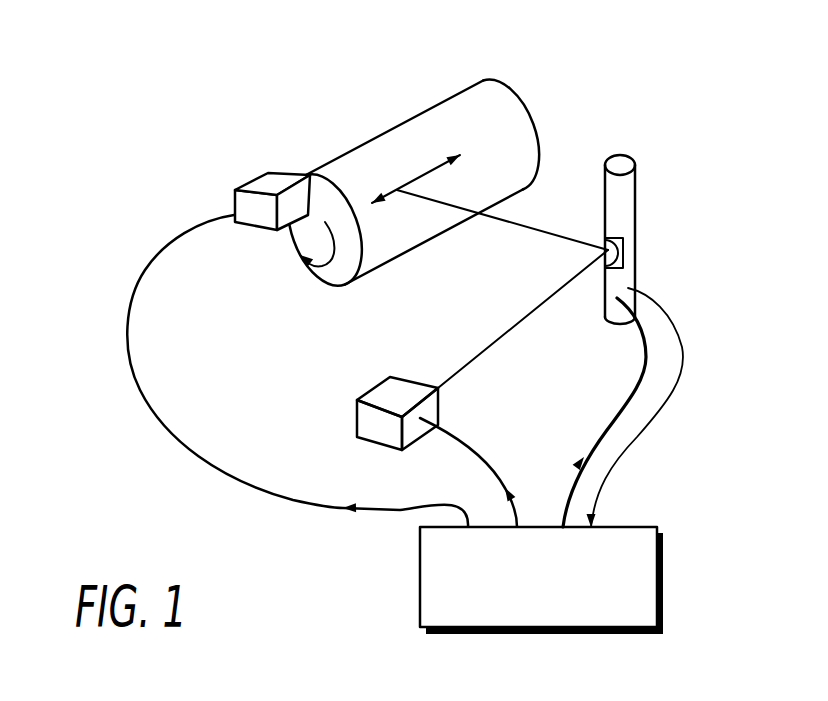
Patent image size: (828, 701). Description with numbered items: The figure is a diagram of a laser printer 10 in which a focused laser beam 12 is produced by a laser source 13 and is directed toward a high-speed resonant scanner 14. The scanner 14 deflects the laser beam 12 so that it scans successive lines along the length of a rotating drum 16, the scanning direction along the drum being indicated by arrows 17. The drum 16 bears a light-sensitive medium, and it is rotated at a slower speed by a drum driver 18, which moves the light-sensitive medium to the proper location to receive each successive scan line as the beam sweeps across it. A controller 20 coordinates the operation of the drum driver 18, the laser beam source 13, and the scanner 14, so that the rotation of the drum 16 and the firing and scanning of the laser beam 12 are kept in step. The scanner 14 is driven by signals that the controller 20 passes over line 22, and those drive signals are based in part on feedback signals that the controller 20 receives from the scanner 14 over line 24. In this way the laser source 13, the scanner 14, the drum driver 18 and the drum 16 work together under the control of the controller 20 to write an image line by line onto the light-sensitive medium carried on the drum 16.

The laser printer 10 is at (150, 488).
The focused laser beam 12 is at (508, 332).
The laser source 13 is at (423, 382).
The high-speed resonant scanner 14 is at (633, 197).
The drum 16 is at (427, 103).
The arrows 17 is at (403, 187).
The drum driver 18 is at (242, 190).
The controller 20 is at (665, 578).
The line 22 is at (607, 432).
The line 24 is at (640, 440).